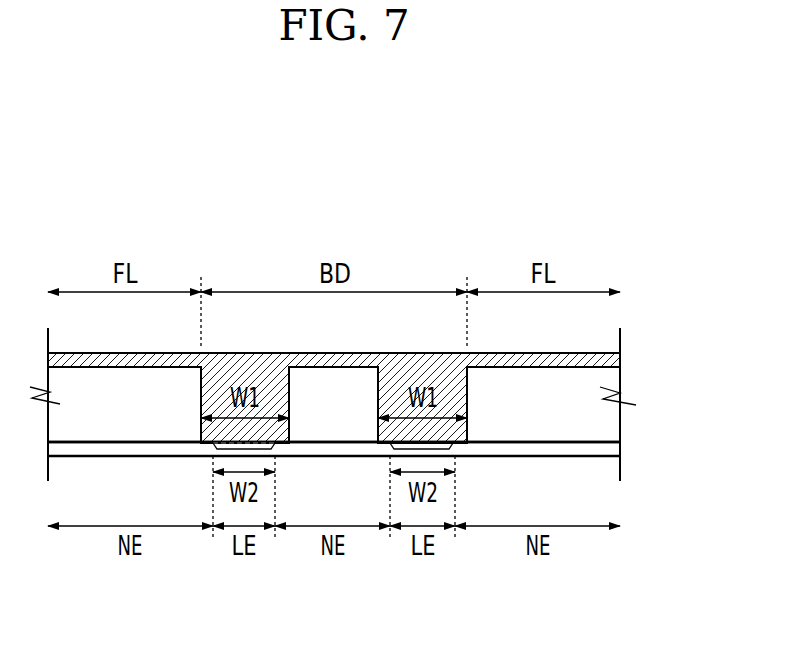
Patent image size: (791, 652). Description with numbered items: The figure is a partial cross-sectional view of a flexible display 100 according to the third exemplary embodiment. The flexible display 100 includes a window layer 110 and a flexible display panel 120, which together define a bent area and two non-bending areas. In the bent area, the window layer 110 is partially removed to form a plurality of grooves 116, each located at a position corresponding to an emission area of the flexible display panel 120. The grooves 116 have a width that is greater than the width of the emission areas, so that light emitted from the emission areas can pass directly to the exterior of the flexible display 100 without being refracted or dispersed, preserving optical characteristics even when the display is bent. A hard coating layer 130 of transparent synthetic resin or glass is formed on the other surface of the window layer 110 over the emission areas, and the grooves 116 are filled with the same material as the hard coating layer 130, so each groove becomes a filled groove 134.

The flexible display 100 is at (211, 216).
The window layer 110 is at (608, 412).
The grooves 116 is at (467, 407).
The flexible display panel 120 is at (612, 450).
The hard coating layer 130 is at (608, 360).
The filled groove 134 is at (268, 378).